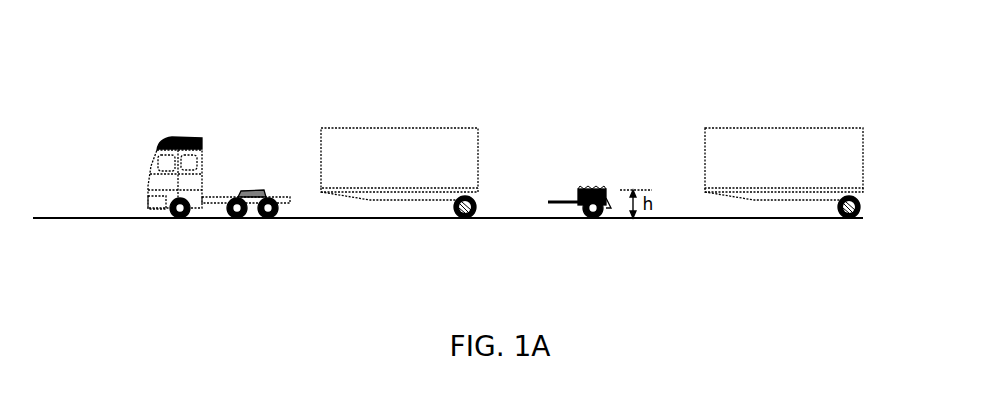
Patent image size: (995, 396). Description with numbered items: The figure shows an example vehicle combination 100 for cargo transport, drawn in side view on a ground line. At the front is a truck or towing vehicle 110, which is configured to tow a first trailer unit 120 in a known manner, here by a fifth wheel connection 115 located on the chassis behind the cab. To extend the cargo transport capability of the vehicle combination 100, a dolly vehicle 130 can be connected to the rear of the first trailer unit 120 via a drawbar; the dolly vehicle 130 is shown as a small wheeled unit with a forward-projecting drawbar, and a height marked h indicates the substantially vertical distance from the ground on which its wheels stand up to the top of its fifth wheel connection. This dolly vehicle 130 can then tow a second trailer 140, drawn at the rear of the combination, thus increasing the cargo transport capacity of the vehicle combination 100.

The vehicle combination 100 is at (99, 69).
The towing vehicle 110 is at (161, 147).
The fifth wheel connection 115 is at (253, 192).
The first trailer unit 120 is at (405, 128).
The dolly vehicle 130 is at (590, 186).
The second trailer 140 is at (775, 128).